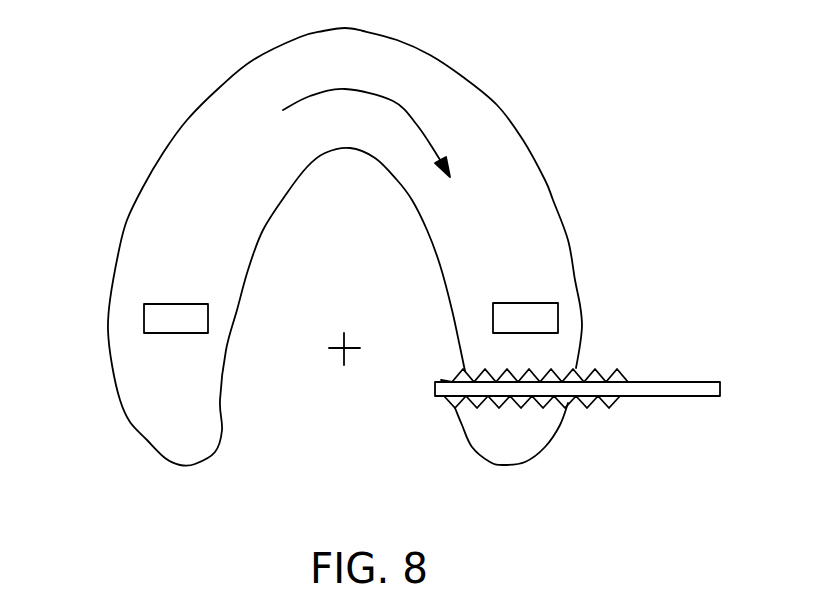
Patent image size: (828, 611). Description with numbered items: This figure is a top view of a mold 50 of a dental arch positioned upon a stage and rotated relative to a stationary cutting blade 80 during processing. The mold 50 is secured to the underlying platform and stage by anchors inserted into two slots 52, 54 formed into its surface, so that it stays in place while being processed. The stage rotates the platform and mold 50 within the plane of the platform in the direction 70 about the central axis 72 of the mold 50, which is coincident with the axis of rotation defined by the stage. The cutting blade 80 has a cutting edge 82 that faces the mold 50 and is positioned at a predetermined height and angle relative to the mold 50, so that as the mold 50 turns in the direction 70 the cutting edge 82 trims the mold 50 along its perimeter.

The mold 50 is at (182, 120).
The slot 52 is at (144, 316).
The slot 54 is at (558, 318).
The direction of rotation 70 is at (395, 100).
The central axis 72 is at (341, 360).
The cutting blade 80 is at (687, 397).
The cutting edge 82 is at (462, 408).